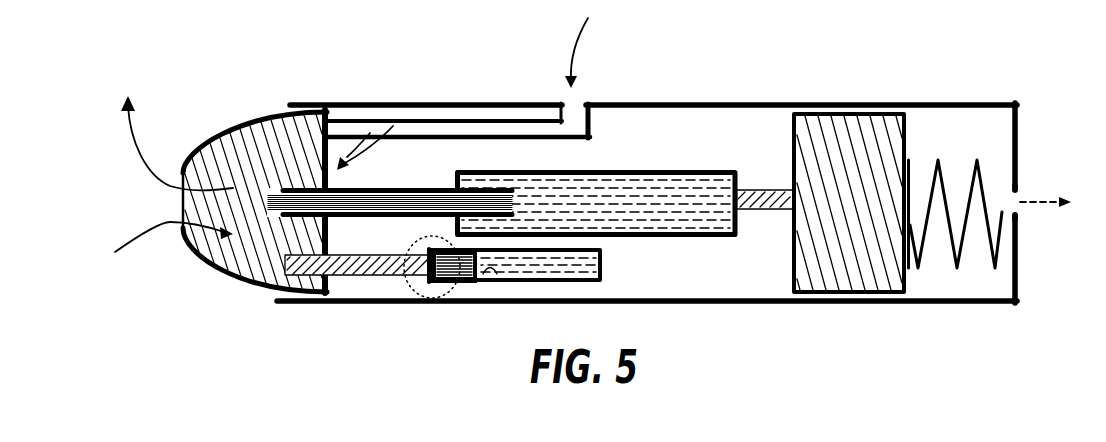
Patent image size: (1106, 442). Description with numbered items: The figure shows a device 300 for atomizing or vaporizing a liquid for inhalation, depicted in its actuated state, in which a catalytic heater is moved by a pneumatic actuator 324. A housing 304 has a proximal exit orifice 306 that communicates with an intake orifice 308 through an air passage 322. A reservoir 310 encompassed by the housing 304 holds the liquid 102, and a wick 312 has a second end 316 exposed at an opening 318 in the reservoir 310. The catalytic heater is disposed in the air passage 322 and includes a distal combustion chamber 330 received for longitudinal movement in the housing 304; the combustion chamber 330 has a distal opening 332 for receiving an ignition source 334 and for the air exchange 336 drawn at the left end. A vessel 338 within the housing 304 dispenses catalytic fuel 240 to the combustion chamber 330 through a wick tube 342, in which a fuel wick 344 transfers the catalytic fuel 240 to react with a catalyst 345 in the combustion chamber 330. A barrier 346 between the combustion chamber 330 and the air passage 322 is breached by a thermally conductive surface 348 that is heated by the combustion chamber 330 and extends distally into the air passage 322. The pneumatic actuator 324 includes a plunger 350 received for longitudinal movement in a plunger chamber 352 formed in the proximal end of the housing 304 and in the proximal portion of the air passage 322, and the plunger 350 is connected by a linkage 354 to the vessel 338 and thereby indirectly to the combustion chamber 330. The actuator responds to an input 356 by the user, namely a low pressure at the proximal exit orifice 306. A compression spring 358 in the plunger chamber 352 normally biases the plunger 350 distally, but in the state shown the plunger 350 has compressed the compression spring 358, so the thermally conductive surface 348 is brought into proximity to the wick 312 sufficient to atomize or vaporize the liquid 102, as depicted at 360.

The liquid 102 is at (551, 271).
The catalytic fuel 240 is at (626, 213).
The device 300 is at (857, 96).
The housing 304 is at (753, 103).
The proximal exit orifice 306 is at (1019, 189).
The intake orifice 308 is at (575, 118).
The reservoir 310 is at (484, 279).
The wick 312 is at (445, 284).
The second end 316 is at (425, 279).
The opening 318 is at (423, 281).
The air passage 322 is at (540, 113).
The pneumatic actuator 324 is at (223, 287).
The combustion chamber 330 is at (216, 147).
The distal opening 332 is at (175, 200).
The ignition source 334 is at (165, 226).
The air exchange 336 is at (181, 177).
The vessel 338 is at (511, 183).
The wick tube 342 is at (415, 187).
The fuel wick 344 is at (397, 187).
The catalyst 345 is at (286, 160).
The barrier 346 is at (333, 104).
The thermally conductive surface 348 is at (357, 277).
The plunger 350 is at (850, 294).
The plunger chamber 352 is at (932, 115).
The linkage 354 is at (767, 210).
The input 356 is at (1043, 208).
The compression spring 358 is at (923, 241).
The atomized or vaporized liquid 360 is at (458, 294).